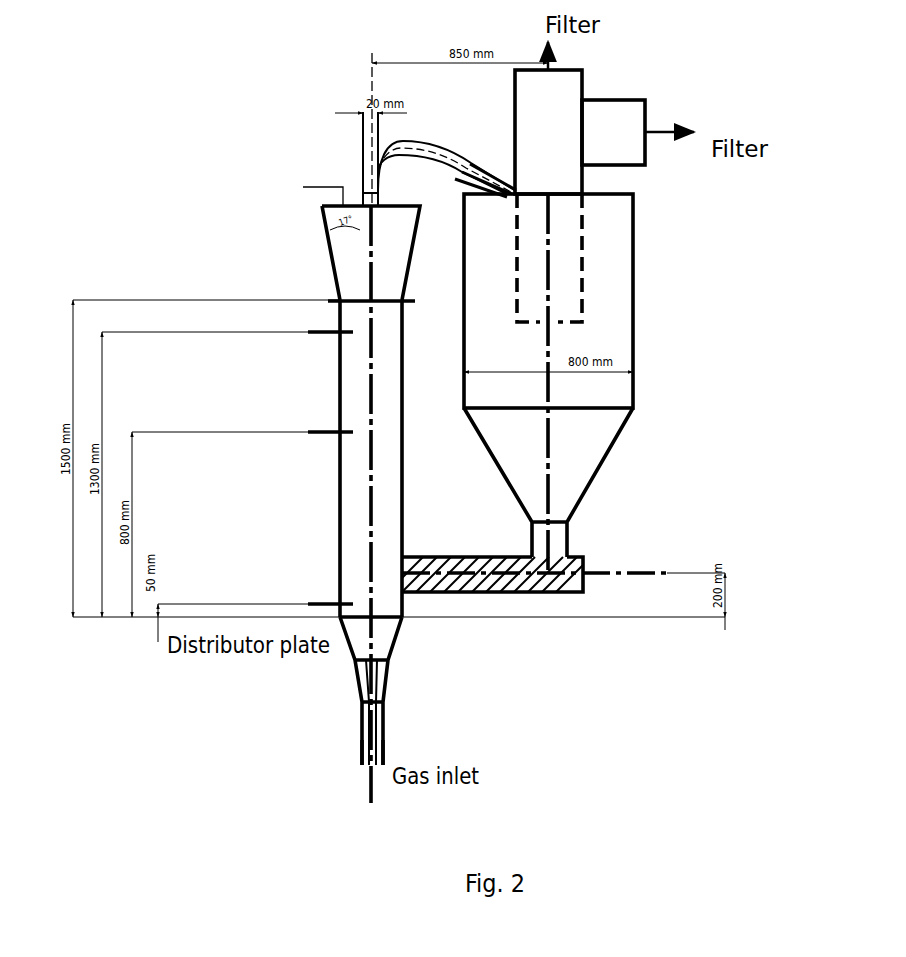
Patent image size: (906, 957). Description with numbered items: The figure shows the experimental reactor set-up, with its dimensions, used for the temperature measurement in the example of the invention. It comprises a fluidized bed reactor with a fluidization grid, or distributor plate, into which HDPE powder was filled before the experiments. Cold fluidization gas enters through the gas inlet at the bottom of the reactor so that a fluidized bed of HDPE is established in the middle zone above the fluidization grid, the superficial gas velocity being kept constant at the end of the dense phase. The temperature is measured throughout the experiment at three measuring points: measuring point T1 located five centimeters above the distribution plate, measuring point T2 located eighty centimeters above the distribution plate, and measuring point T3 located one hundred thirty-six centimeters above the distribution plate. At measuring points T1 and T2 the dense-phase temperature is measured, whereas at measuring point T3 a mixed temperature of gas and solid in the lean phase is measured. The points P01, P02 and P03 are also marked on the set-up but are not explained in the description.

The measuring point T1 is at (330, 596).
The measuring point T2 is at (330, 422).
The measuring point T3 is at (330, 320).
The pressure sensor P01 at gas inlet P01 is at (362, 761).
The pressure sensor P02 above distributor plate P02 is at (340, 603).
The pressure sensor P03 at riser outlet P03 is at (323, 188).